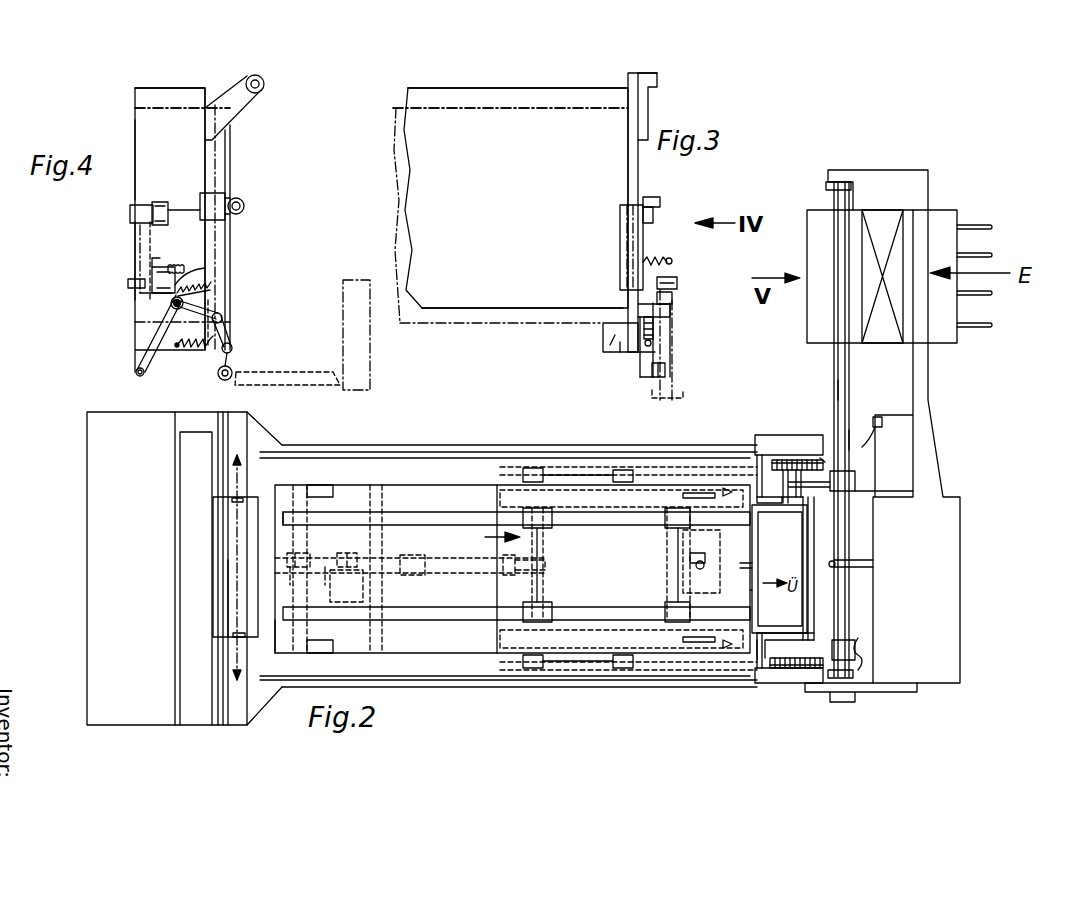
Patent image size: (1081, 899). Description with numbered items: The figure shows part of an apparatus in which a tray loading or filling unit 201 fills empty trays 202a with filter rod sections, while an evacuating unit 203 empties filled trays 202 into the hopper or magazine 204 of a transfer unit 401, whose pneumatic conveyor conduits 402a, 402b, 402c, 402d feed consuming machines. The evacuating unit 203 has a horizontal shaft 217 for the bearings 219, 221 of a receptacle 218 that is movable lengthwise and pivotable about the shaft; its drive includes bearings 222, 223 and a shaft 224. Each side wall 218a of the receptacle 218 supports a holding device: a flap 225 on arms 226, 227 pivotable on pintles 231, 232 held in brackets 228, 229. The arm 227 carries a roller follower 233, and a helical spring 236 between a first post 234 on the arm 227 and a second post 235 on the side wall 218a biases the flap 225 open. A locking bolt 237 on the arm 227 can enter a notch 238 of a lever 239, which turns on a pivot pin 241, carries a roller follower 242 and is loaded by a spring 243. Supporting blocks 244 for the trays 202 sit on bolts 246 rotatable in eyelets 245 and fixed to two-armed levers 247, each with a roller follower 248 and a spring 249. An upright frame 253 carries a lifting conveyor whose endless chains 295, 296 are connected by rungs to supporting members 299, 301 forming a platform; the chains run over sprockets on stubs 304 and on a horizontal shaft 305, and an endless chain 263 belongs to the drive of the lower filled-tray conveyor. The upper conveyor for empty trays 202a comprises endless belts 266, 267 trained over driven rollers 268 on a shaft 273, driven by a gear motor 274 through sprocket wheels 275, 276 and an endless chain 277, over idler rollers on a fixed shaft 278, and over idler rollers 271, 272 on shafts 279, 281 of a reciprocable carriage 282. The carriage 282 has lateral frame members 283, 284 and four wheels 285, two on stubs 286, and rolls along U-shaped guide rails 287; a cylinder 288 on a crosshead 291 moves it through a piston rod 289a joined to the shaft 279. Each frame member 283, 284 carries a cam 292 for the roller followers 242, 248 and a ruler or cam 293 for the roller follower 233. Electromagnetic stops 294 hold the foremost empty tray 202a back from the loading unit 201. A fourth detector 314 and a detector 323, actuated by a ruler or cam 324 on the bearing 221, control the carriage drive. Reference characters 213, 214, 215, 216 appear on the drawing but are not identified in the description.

In FIG. 2, the tray loading or filling unit 201 is at (133, 726).
In FIG. 3, the trays 202 is at (515, 308).
In FIG. 4, the empty trays 202a is at (157, 108).
In FIG. 3, the empty trays 202a is at (395, 194).
In FIG. 2, the evacuating unit 203 is at (981, 433).
In FIG. 2, the hopper or magazine 204 is at (888, 215).
In FIG. 2, the upper stop 213 is at (240, 498).
In FIG. 2, the lower stop 214 is at (245, 638).
In FIG. 2, the guide block 215 is at (236, 567).
In FIG. 2, the guide block lower part 216 is at (243, 598).
In FIG. 2, the horizontal shaft 217 is at (841, 392).
In FIG. 4, the receptacle 218 is at (120, 131).
In FIG. 3, the receptacle 218 is at (513, 108).
In FIG. 2, the receptacle 218 is at (818, 530).
In FIG. 4, the side wall 218a is at (187, 147).
In FIG. 3, the side wall 218a is at (628, 156).
In FIG. 2, the side wall 218a is at (813, 435).
In FIG. 2, the bearing 219 is at (856, 482).
In FIG. 4, the bearing 221 is at (258, 77).
In FIG. 3, the bearing 221 is at (655, 78).
In FIG. 2, the bearing 221 is at (855, 648).
In FIG. 2, the bearing 222 is at (810, 476).
In FIG. 4, the bearing 223 is at (244, 201).
In FIG. 3, the bearing 223 is at (652, 200).
In FIG. 2, the shaft 224 is at (835, 357).
In FIG. 4, the flap 225 is at (135, 246).
In FIG. 3, the flap 225 is at (620, 236).
In FIG. 2, the flap 225 is at (768, 670).
In FIG. 4, the arm 226 is at (130, 213).
In FIG. 3, the arm 226 is at (656, 216).
In FIG. 4, the arm 227 is at (182, 274).
In FIG. 3, the arm 227 is at (678, 281).
In FIG. 4, the bracket 228 is at (166, 224).
In FIG. 4, the bracket 229 is at (164, 254).
In FIG. 2, the bracket 229 is at (855, 674).
In FIG. 4, the pintle 231 is at (158, 202).
In FIG. 4, the pintle 232 is at (178, 280).
In FIG. 4, the roller follower 233 is at (128, 286).
In FIG. 3, the roller follower 233 is at (673, 291).
In FIG. 3, the first post 234 is at (673, 260).
In FIG. 3, the second post 235 is at (649, 257).
In FIG. 4, the helical spring 236 is at (180, 264).
In FIG. 3, the helical spring 236 is at (661, 257).
In FIG. 4, the locking bolt 237 is at (175, 310).
In FIG. 3, the locking bolt 237 is at (672, 306).
In FIG. 4, the notch 238 is at (180, 305).
In FIG. 4, the lever 239 is at (163, 345).
In FIG. 3, the lever 239 is at (672, 356).
In FIG. 4, the pivot pin 241 is at (171, 305).
In FIG. 3, the pivot pin 241 is at (656, 325).
In FIG. 4, the roller follower 242 is at (142, 375).
In FIG. 4, the spring 243 is at (208, 286).
In FIG. 4, the block 244 is at (231, 320).
In FIG. 3, the block 244 is at (640, 372).
In FIG. 4, the eyelets 245 is at (233, 347).
In FIG. 4, the bolt 246 is at (237, 352).
In FIG. 3, the bolt 246 is at (646, 366).
In FIG. 4, the two-armed lever 247 is at (235, 332).
In FIG. 3, the two-armed lever 247 is at (652, 378).
In FIG. 4, the roller follower 248 is at (218, 373).
In FIG. 4, the spring 249 is at (222, 315).
In FIG. 3, the spring 249 is at (656, 337).
In FIG. 2, the upright frame 253 is at (822, 460).
In FIG. 2, the endless chain 263 is at (668, 545).
In FIG. 2, the endless conveyor belt 266 is at (397, 628).
In FIG. 2, the endless conveyor belt 267 is at (445, 520).
In FIG. 2, the driven rollers 268 is at (315, 513).
In FIG. 2, the idler roller 271 is at (546, 536).
In FIG. 2, the idler roller 272 is at (752, 532).
In FIG. 2, the horizontal shaft 273 is at (310, 550).
In FIG. 2, the gear motor 274 is at (360, 597).
In FIG. 2, the sprocket wheel 275 is at (347, 550).
In FIG. 2, the sprocket wheel 276 is at (291, 580).
In FIG. 2, the endless chain 277 is at (317, 580).
In FIG. 2, the horizontal shaft 278 is at (682, 582).
In FIG. 2, the shaft 279 is at (546, 576).
In FIG. 2, the shaft 281 is at (745, 562).
In FIG. 2, the reciprocable carriage 282 is at (485, 542).
In FIG. 2, the lateral frame member 283 is at (500, 640).
In FIG. 2, the lateral frame member 284 is at (500, 501).
In FIG. 2, the wheels 285 is at (615, 472).
In FIG. 2, the stubs 286 is at (626, 478).
In FIG. 2, the guide rails 287 is at (523, 473).
In FIG. 2, the cylinder 288 is at (440, 574).
In FIG. 2, the piston rod 289a is at (524, 577).
In FIG. 2, the traverse or crosshead 291 is at (392, 555).
In FIG. 4, the cam 292 is at (302, 372).
In FIG. 3, the cam 292 is at (667, 404).
In FIG. 2, the cam 292 is at (691, 492).
In FIG. 4, the ruler or cam 293 is at (343, 280).
In FIG. 3, the ruler or cam 293 is at (709, 350).
In FIG. 2, the ruler or cam 293 is at (730, 488).
In FIG. 2, the electromagnetically operable stops 294 is at (330, 488).
In FIG. 2, the endless chain 295 is at (776, 692).
In FIG. 2, the endless chain 296 is at (837, 440).
In FIG. 2, the supporting member 299 is at (786, 627).
In FIG. 2, the supporting member 301 is at (786, 503).
In FIG. 2, the stubs 304 is at (815, 460).
In FIG. 2, the horizontal shaft 305 is at (808, 458).
In FIG. 2, the fourth detector 314 is at (700, 561).
In FIG. 2, the detector 323 is at (882, 423).
In FIG. 2, the ruler or cam 324 is at (866, 652).
In FIG. 2, the transfer unit or processing unit 401 is at (812, 212).
In FIG. 2, the pneumatic conveyor conduit 402a is at (990, 225).
In FIG. 2, the pneumatic conveyor conduit 402b is at (990, 255).
In FIG. 2, the pneumatic conveyor conduit 402c is at (990, 293).
In FIG. 2, the pneumatic conveyor conduit 402d is at (990, 325).